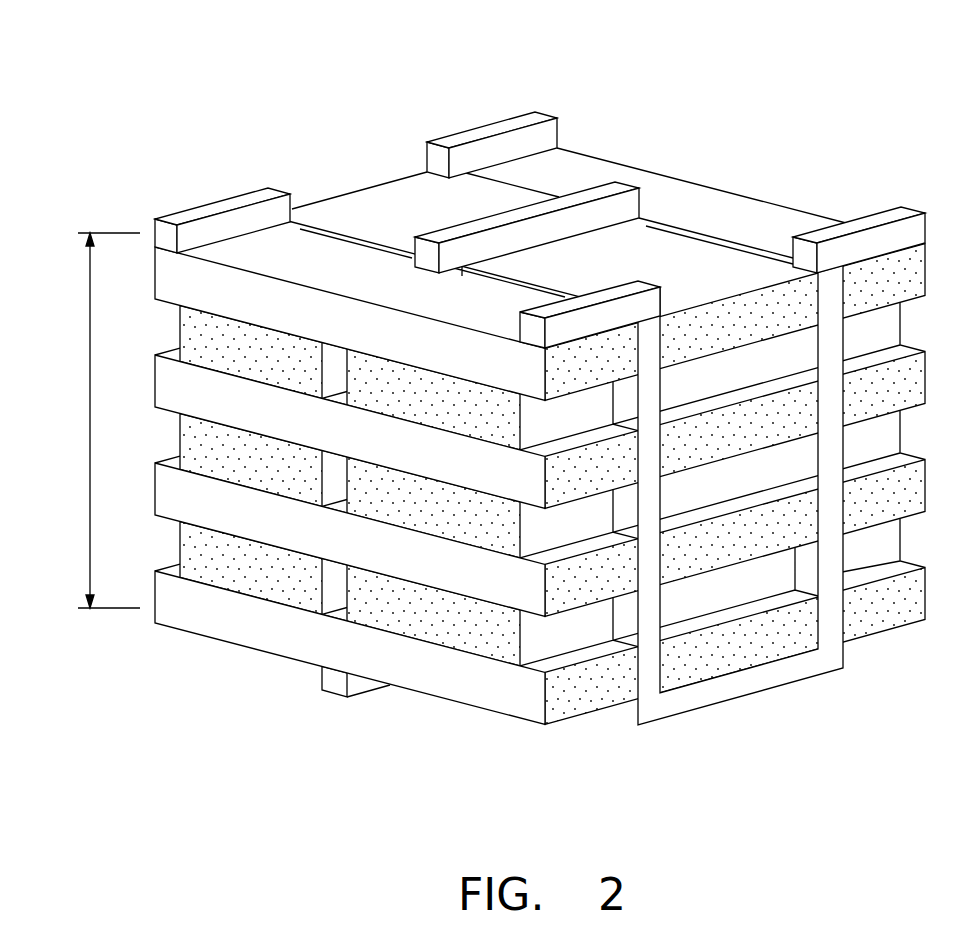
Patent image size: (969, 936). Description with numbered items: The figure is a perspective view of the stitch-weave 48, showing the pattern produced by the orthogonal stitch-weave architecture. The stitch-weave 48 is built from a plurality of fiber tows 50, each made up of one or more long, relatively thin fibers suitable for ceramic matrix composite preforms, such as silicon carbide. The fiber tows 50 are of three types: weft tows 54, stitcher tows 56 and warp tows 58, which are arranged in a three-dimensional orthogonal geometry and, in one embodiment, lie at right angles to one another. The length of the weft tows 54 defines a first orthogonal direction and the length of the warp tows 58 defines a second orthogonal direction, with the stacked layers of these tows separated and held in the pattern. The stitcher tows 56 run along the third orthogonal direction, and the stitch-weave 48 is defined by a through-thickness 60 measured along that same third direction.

The stitch-weave 48 is at (706, 72).
The fiber tows 50 is at (265, 248).
The weft tows 54 is at (600, 347).
The stitcher tows 56 is at (650, 373).
The warp tows 58 is at (193, 337).
The through-thickness 60 is at (88, 385).